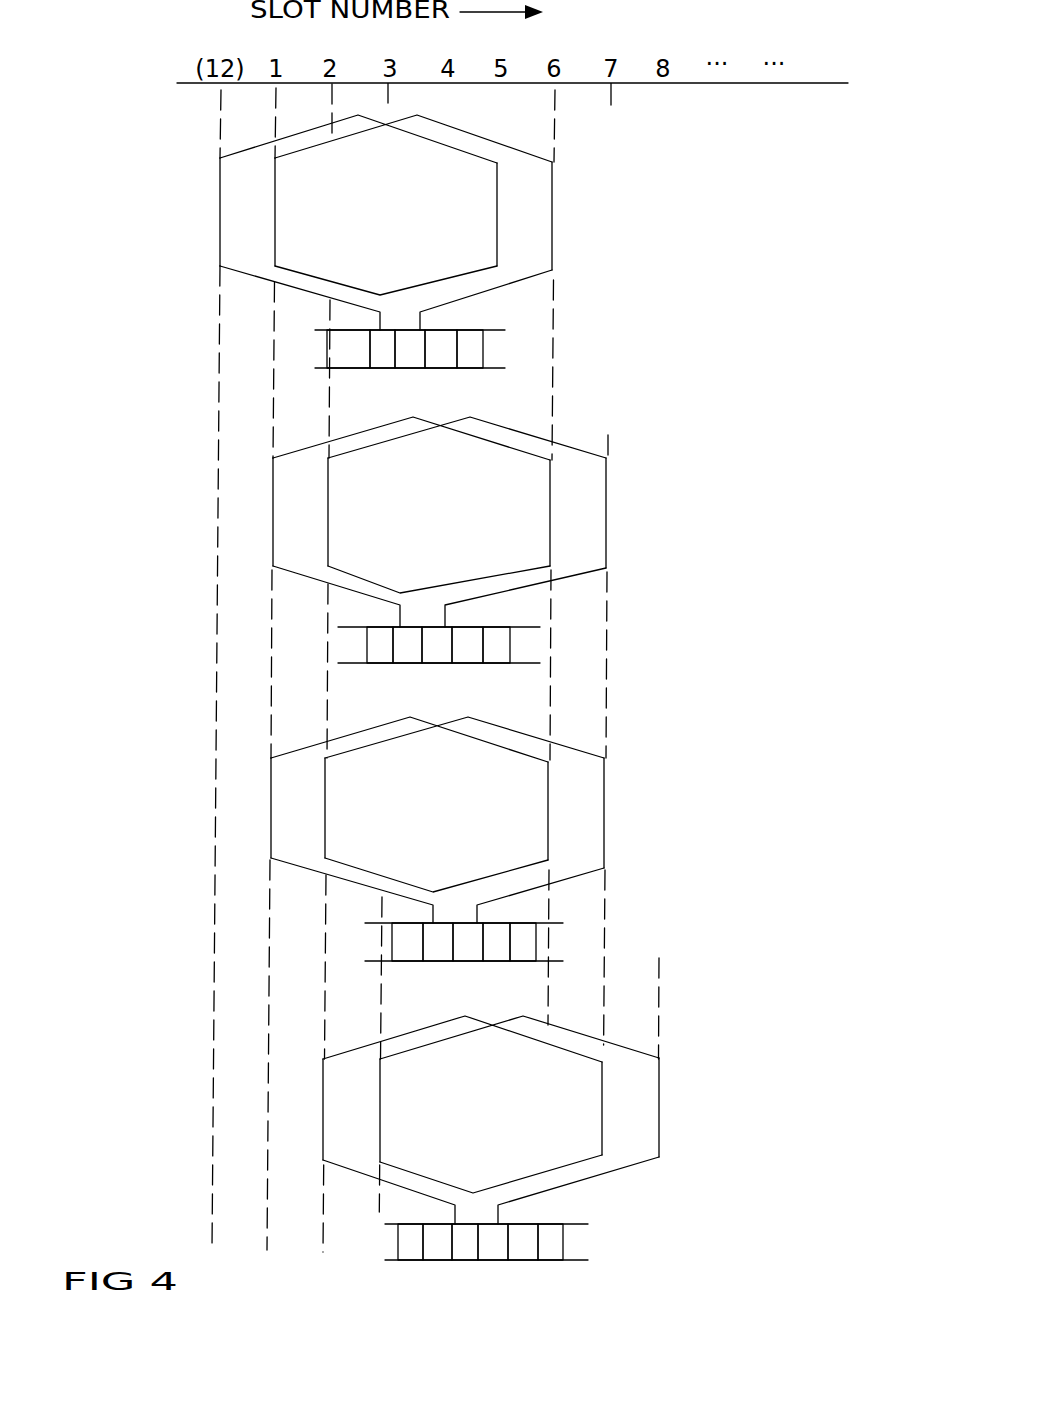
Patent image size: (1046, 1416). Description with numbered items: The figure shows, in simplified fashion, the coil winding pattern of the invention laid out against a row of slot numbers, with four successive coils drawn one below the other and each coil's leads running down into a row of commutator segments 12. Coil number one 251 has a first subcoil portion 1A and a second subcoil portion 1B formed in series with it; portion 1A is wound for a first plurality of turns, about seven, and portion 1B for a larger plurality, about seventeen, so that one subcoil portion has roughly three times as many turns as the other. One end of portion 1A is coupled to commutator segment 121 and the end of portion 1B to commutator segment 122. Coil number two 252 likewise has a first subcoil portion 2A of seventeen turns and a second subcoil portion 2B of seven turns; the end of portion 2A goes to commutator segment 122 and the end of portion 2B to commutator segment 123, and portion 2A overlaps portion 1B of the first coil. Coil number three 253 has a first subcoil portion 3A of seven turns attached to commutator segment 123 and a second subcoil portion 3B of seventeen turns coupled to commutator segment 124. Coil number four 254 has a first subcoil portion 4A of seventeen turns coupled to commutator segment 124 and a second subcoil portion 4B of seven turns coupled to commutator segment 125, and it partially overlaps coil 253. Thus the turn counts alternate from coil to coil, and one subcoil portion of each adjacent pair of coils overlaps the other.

The first subcoil portion 1A is at (221, 215).
The second subcoil portion 1B is at (553, 178).
The first subcoil portion 2A is at (273, 523).
The second subcoil portion 2B is at (608, 475).
The first subcoil portion 3A is at (269, 797).
The second subcoil portion 3B is at (606, 778).
The first subcoil portion 4A is at (323, 1117).
The second subcoil portion 4B is at (660, 1070).
The coil number 1 251 is at (418, 222).
The coil number 2 252 is at (455, 522).
The coil number 3 253 is at (439, 820).
The coil number 4 254 is at (466, 1120).
The commutator segment 12 is at (488, 312).
The commutator segment number 1 121 is at (385, 368).
The commutator segment number 2 122 is at (410, 368).
The commutator segment number 3 123 is at (437, 663).
The commutator segment number 4 124 is at (470, 961).
The commutator segment number 5 125 is at (490, 1260).